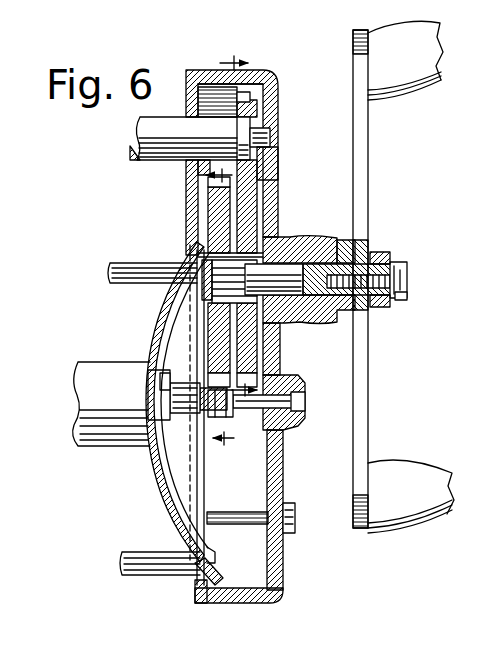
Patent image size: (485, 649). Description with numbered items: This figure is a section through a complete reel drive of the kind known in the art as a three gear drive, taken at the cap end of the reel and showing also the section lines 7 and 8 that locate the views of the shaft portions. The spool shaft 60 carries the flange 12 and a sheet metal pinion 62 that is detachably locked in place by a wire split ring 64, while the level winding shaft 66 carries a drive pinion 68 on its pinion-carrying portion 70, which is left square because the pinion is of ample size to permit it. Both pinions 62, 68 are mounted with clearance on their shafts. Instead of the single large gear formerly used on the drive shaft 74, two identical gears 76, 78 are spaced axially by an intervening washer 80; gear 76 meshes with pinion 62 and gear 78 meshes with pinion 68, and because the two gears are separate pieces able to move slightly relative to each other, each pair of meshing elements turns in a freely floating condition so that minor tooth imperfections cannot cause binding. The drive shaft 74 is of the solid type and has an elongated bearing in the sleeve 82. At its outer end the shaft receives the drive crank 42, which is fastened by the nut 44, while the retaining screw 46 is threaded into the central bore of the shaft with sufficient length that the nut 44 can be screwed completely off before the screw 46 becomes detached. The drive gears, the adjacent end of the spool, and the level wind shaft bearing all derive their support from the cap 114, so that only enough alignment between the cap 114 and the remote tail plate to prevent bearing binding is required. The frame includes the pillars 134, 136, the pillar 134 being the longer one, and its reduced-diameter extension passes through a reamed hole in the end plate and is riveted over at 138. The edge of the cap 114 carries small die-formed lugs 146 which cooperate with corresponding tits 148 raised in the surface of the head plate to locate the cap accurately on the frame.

The section line 7- 7 is at (220, 310).
The section line 8- 8 is at (238, 233).
The flange 12 is at (149, 337).
The drive crank 42 is at (361, 130).
The nut 44 is at (388, 254).
The retaining screw 46 is at (398, 300).
The spool shaft 60 is at (180, 414).
The sheet metal pinion 62 is at (158, 380).
The wire split ring 64 is at (233, 416).
The level winding shaft 66 is at (160, 158).
The drive pinion 68 is at (256, 103).
The pinion-carrying portion 70 is at (243, 128).
The drive shaft 74 is at (285, 273).
The gear 76 is at (197, 213).
The gear 78 is at (248, 194).
The washer 80 is at (205, 246).
The sleeve 82 is at (309, 294).
The cap 114 is at (278, 444).
The pillar 134 is at (150, 576).
The pillar 136 is at (127, 284).
The riveted over extension 138 is at (214, 557).
The lug 146 is at (224, 584).
The tit 148 is at (200, 604).